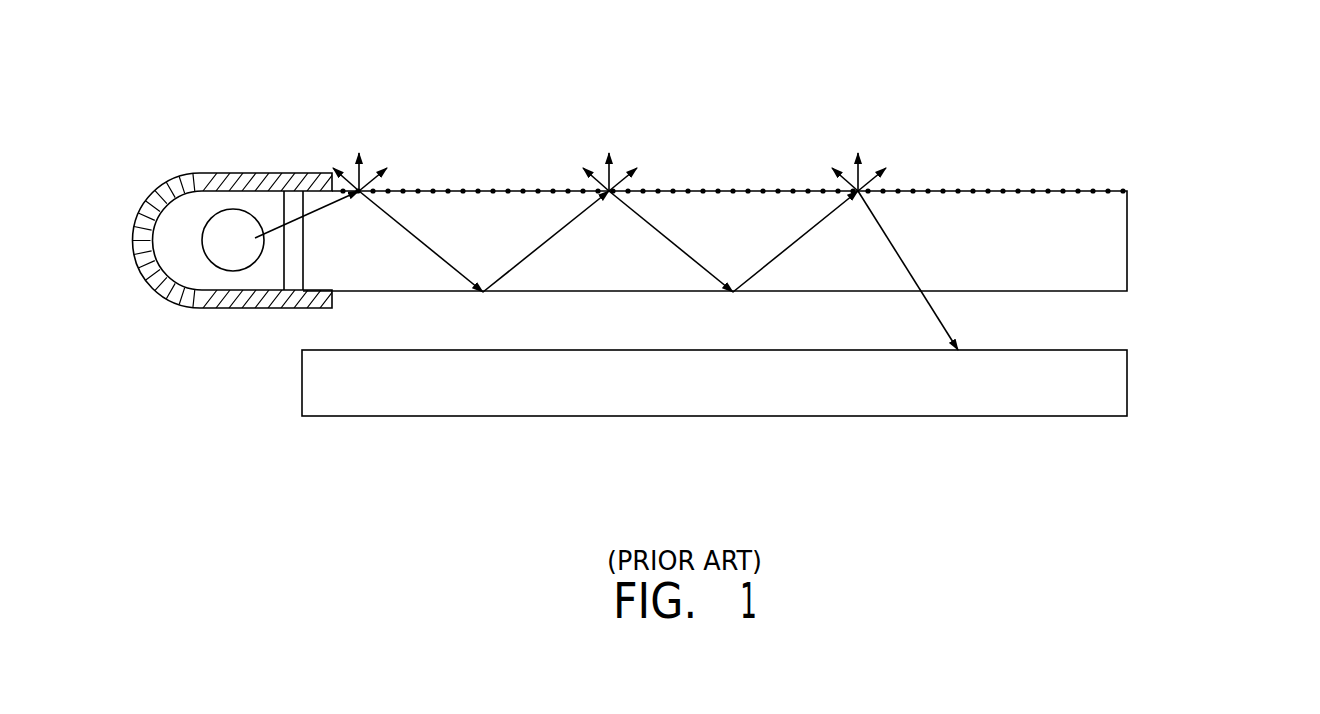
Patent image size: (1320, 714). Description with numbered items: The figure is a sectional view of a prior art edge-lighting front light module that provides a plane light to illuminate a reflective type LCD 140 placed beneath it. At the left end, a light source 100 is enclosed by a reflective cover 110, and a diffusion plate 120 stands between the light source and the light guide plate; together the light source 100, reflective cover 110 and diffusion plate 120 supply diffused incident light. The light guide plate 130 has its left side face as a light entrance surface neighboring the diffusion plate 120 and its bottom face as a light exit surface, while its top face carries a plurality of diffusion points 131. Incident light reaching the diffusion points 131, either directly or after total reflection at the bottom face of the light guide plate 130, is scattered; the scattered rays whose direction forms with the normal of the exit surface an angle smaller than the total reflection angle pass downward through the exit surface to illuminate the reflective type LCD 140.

The light source 100 is at (215, 248).
The reflective cover 110 is at (166, 197).
The diffusion plate 120 is at (293, 265).
The light guide plate 130 is at (1093, 247).
The diffusion points 131 is at (492, 191).
The reflective type LCD 140 is at (1098, 385).